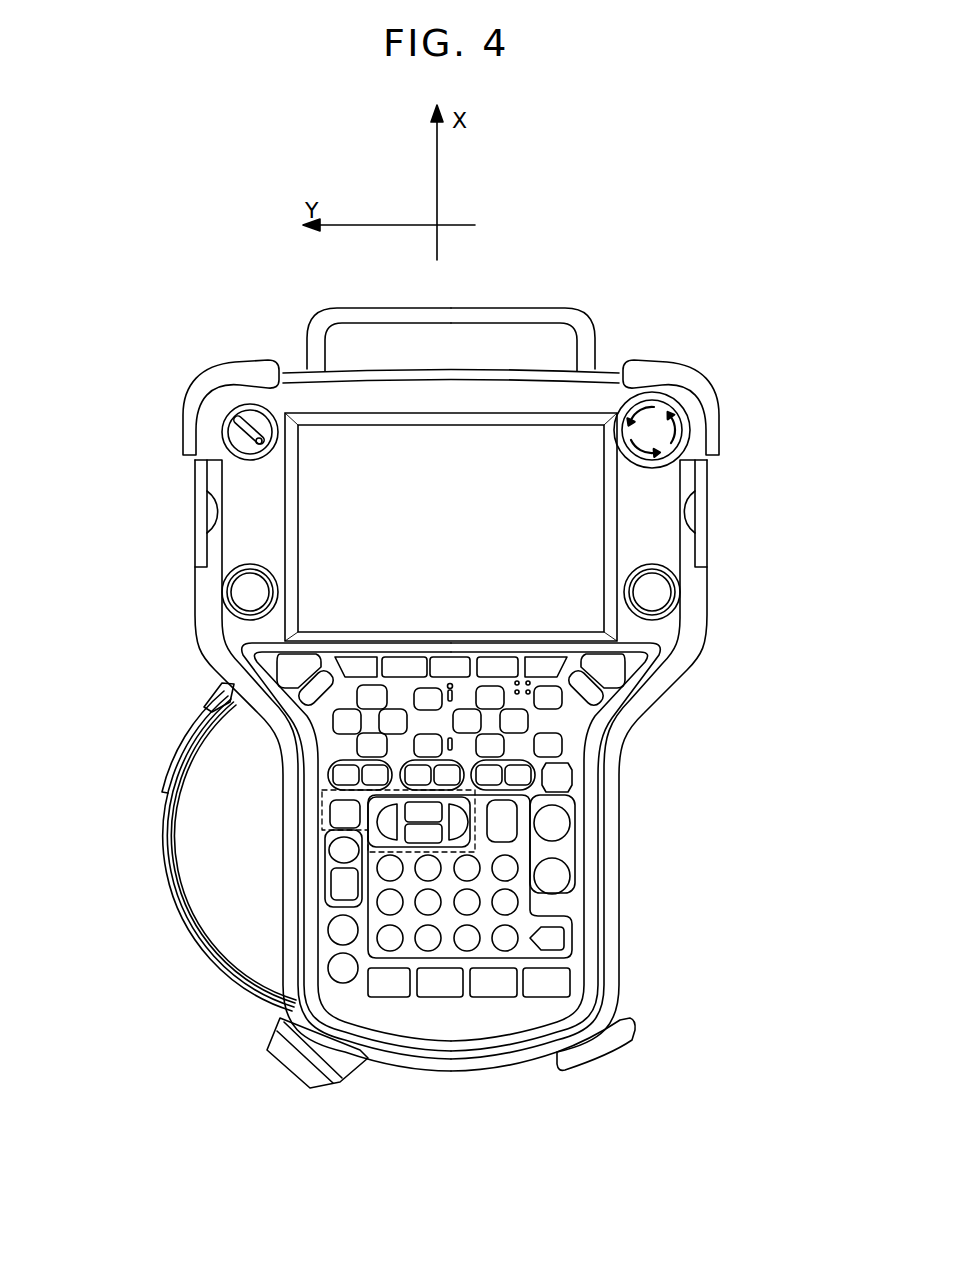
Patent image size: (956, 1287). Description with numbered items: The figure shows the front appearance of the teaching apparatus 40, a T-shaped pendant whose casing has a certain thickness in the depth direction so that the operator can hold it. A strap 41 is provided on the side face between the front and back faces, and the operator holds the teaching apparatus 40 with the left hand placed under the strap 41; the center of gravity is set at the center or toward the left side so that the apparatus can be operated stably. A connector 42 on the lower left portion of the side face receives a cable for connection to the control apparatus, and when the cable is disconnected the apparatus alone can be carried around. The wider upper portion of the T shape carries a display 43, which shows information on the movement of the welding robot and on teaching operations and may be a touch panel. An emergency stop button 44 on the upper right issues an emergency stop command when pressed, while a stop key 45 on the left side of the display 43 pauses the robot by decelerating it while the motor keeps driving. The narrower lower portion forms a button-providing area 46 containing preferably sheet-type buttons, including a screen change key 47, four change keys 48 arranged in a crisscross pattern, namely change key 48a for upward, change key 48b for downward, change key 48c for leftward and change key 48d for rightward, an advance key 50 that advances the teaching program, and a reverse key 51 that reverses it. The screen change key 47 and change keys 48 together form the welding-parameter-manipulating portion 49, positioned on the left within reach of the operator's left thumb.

The teaching apparatus 40 is at (552, 244).
The strap 41 is at (167, 822).
The connector 42 is at (291, 1063).
The display 43 is at (548, 528).
The emergency stop button 44 is at (654, 430).
The stop key 45 is at (248, 592).
The button-providing area 46 is at (586, 773).
The screen change key 47 is at (343, 812).
The change keys 48 is at (137, 918).
The change key 48a is at (427, 813).
The change key 48b is at (427, 838).
The change key 48c is at (387, 821).
The change key 48d is at (460, 824).
The welding-parameter-manipulating portion 49 is at (323, 801).
The advance key 50 is at (553, 822).
The reverse key 51 is at (553, 877).